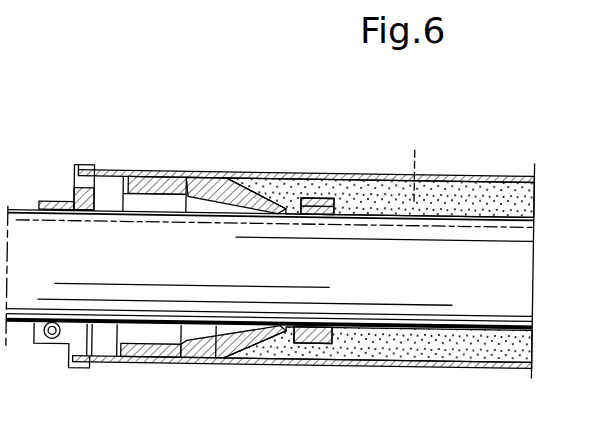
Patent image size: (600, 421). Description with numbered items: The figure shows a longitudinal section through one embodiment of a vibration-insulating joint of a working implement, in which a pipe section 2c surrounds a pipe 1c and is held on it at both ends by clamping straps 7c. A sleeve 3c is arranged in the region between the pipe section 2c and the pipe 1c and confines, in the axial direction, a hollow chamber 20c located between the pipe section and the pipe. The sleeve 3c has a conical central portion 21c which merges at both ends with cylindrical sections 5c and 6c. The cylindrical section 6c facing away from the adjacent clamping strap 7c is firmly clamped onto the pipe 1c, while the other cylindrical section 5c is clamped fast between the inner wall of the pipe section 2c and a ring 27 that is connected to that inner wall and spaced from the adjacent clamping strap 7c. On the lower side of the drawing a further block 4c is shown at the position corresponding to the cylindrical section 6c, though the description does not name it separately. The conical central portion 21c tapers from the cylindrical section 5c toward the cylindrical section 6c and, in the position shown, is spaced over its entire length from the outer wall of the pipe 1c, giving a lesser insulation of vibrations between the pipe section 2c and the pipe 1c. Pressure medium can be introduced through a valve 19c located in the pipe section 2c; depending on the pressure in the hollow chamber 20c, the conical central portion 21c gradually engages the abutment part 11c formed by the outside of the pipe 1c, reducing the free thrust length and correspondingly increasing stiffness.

The pipe 1c is at (372, 214).
The pipe section 2c is at (477, 173).
The sleeve 3c is at (252, 182).
The lower stop block 4c is at (313, 343).
The cylindrical section 5c is at (158, 173).
The cylindrical section 6c is at (313, 198).
The clamping strap 7c is at (83, 173).
The abutment part 11c is at (213, 365).
The valve 19c is at (413, 148).
The hollow chamber 20c is at (466, 359).
The conical central portion 21c is at (227, 179).
The ring 27 is at (147, 365).